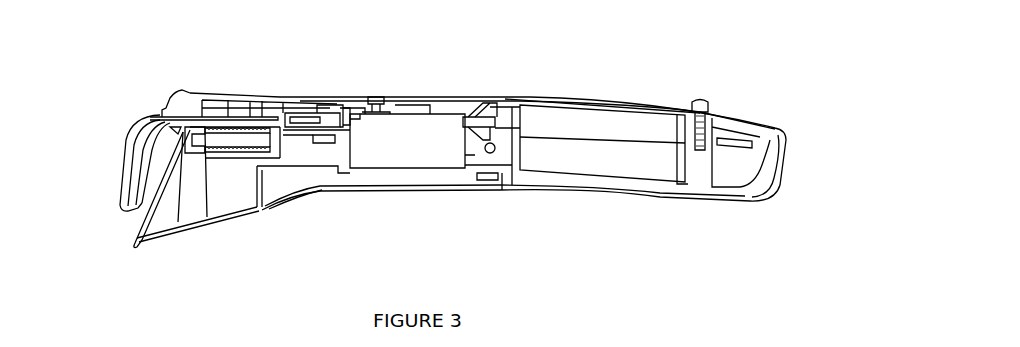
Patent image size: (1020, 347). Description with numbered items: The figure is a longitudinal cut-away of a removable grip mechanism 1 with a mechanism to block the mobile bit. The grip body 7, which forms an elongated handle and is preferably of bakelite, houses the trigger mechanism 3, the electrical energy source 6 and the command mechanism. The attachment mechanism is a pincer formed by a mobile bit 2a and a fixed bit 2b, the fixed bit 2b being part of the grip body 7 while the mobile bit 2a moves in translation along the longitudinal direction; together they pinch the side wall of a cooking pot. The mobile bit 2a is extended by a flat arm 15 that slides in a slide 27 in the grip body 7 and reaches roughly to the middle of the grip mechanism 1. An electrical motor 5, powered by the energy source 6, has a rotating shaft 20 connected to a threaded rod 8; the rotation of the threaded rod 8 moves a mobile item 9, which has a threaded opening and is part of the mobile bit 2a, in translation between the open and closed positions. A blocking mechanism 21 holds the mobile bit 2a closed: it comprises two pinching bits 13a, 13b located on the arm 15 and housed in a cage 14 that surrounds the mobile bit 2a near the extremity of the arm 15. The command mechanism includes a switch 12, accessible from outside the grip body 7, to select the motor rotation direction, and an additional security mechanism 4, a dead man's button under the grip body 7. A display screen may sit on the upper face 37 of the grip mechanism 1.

The removable grip mechanism 1 is at (623, 85).
The mobile bit 2a is at (120, 168).
The fixed bit 2b is at (130, 250).
The trigger mechanism 3 is at (254, 93).
The additional security mechanism 4 is at (362, 190).
The electrical motor 5 is at (421, 168).
The electrical energy source 6 is at (622, 187).
The grip body 7 is at (716, 202).
The threaded rod 8 is at (220, 143).
The mobile item 9 is at (246, 120).
The switch 12 is at (331, 110).
The pinching bit 13a is at (478, 113).
The pinching bit 13b is at (477, 128).
The cage 14 is at (486, 121).
The arm 15 is at (498, 127).
The shaft 20 is at (322, 146).
The blocking mechanism 21 is at (446, 111).
The slide 27 is at (284, 112).
The upper face 37 is at (536, 95).